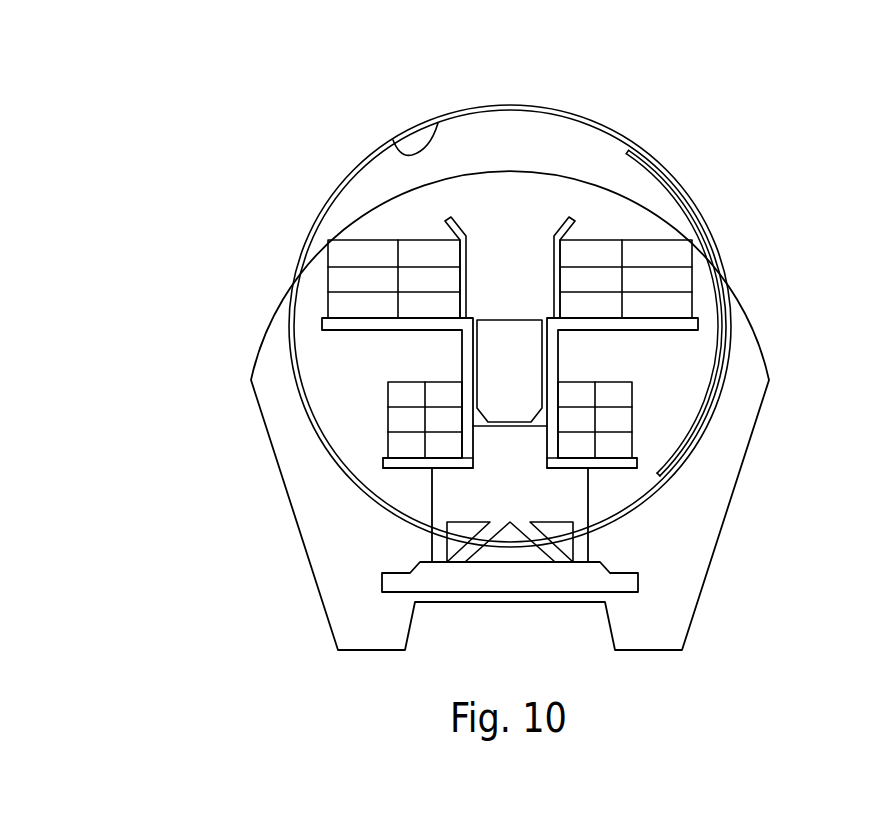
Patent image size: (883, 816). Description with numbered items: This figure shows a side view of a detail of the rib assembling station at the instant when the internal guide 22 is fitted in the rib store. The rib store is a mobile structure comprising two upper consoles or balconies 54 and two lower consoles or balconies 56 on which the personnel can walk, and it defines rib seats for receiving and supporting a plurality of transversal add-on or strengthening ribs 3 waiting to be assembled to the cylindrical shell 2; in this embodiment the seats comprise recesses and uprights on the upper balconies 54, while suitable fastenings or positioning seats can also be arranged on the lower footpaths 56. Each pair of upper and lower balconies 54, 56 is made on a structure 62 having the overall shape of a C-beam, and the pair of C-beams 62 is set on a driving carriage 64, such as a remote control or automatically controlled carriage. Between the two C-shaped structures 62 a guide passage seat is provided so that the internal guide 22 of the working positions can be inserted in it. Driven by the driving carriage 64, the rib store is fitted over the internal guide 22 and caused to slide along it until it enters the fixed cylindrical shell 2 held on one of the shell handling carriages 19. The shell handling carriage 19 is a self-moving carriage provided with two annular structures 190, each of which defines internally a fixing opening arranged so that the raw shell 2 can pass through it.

The annular structure 190 is at (302, 162).
The cylindrical shell 2 is at (395, 152).
The transversal add-on rib 3 is at (666, 188).
The internal guide 22 is at (510, 320).
The upper balcony 54 is at (358, 332).
The C-shaped structure 62 is at (439, 356).
The lower balcony 56 is at (403, 468).
The driving carriage 64 is at (432, 498).
The shell handling carriage 19 is at (673, 615).